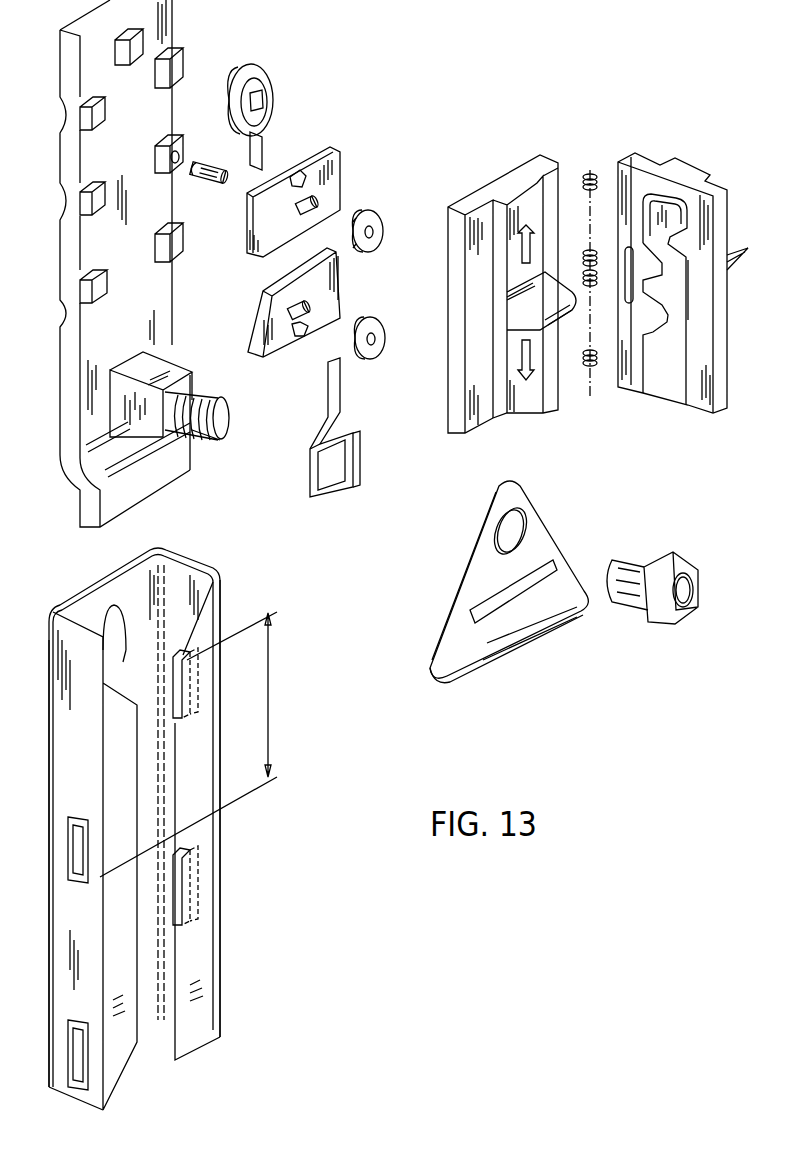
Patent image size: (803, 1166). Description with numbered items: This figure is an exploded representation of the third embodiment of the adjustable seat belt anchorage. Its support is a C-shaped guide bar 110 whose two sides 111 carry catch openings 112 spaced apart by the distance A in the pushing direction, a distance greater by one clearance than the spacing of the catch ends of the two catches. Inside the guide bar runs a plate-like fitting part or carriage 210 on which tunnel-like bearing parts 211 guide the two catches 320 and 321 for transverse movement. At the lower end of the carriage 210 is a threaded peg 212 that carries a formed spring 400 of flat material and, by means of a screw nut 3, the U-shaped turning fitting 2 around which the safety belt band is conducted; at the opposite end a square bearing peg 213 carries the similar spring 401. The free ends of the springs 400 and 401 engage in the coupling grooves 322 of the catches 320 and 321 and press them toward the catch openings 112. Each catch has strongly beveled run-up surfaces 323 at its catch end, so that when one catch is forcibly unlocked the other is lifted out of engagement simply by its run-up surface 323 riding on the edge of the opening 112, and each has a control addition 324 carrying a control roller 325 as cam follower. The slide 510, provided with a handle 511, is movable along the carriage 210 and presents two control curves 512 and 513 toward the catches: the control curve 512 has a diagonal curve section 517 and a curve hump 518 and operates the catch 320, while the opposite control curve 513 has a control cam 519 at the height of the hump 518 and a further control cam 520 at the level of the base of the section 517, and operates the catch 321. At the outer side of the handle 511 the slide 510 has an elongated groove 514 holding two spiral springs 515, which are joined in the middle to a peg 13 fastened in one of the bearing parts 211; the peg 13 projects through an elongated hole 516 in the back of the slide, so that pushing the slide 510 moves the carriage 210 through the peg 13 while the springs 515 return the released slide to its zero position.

The turning fitting 2 is at (548, 537).
The screw nut 3 is at (683, 560).
The peg 13 is at (202, 173).
The guide bar 110 is at (78, 580).
The sides 111 is at (60, 673).
The catch openings 112 is at (200, 708).
The fitting part 210 is at (70, 372).
The bearing parts 211 is at (173, 72).
The threaded peg 212 is at (170, 365).
The bearing peg 213 is at (137, 50).
The catch 320 is at (291, 337).
The catch 321 is at (318, 165).
The coupling grooves 322 is at (298, 338).
The run-up surfaces 323 is at (262, 325).
The control additions 324 is at (312, 309).
The control roller 325 is at (378, 352).
The form spring 400 is at (338, 485).
The spring 401 is at (272, 91).
The slide 510 is at (697, 172).
The handle 511 is at (748, 248).
The control curve 512 is at (683, 357).
The control curve 513 is at (650, 203).
The elongated groove 514 is at (547, 357).
The spiral springs 515 is at (589, 367).
The elongated hole 516 is at (628, 263).
The curve section 517 is at (678, 300).
The curve hump 518 is at (673, 243).
The control cam 519 is at (650, 210).
The control cam 520 is at (658, 330).
The distance A is at (273, 690).